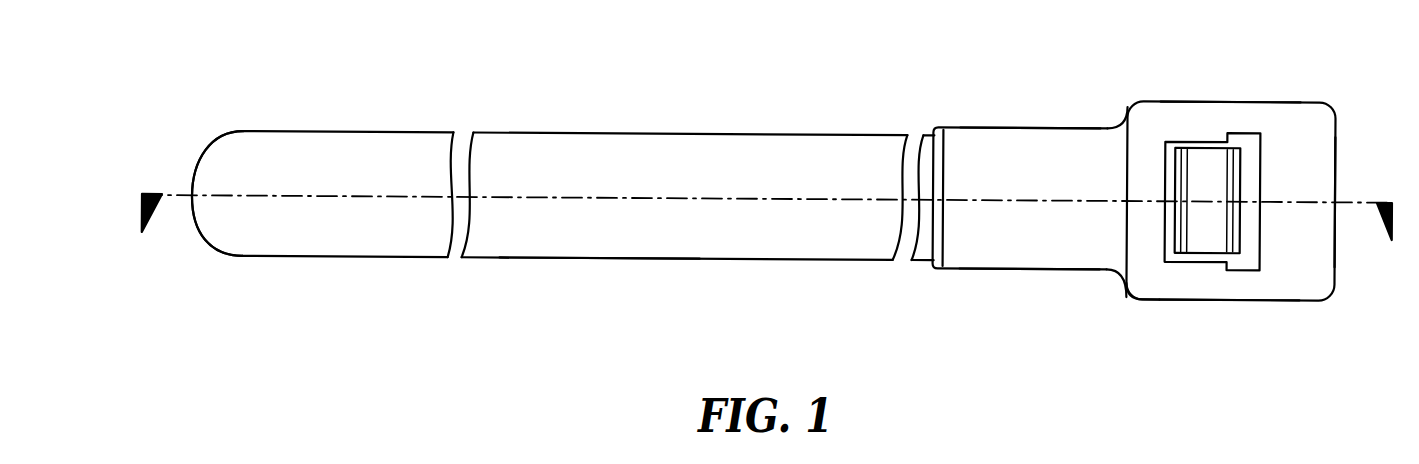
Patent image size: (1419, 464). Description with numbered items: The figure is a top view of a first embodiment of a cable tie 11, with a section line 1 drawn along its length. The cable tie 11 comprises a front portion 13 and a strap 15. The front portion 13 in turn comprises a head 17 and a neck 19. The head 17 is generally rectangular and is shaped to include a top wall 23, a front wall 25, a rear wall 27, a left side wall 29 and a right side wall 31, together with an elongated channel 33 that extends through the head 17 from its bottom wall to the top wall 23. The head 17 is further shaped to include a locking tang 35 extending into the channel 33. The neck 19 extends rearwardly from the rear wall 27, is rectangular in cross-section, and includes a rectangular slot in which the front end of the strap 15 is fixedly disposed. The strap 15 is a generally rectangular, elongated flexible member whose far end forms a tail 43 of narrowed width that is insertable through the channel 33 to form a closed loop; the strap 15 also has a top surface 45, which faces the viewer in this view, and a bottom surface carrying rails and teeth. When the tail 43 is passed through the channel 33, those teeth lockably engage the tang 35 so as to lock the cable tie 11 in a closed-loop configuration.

The section line 1 is at (767, 233).
The cable tie 11 is at (686, 90).
The front portion 13 is at (1077, 98).
The strap 15 is at (562, 112).
The head 17 is at (1237, 325).
The neck 19 is at (1030, 290).
The top wall 23 is at (1313, 270).
The front wall 25 is at (1337, 163).
The rear wall 27 is at (1124, 173).
The left side wall 29 is at (1288, 101).
The right side wall 31 is at (1160, 300).
The elongated channel 33 is at (1250, 150).
The locking tang 35 is at (1210, 178).
The tail 43 is at (192, 195).
The top surface 45 is at (582, 235).